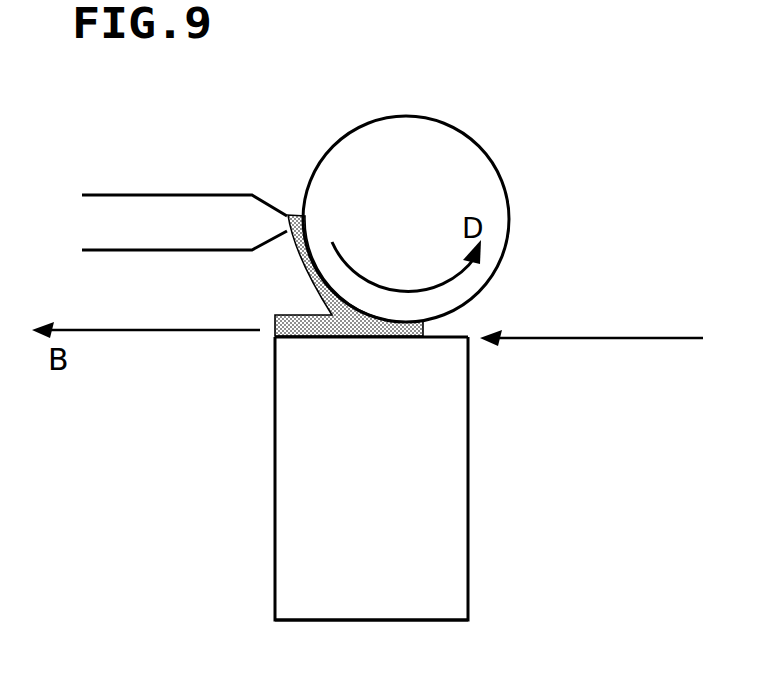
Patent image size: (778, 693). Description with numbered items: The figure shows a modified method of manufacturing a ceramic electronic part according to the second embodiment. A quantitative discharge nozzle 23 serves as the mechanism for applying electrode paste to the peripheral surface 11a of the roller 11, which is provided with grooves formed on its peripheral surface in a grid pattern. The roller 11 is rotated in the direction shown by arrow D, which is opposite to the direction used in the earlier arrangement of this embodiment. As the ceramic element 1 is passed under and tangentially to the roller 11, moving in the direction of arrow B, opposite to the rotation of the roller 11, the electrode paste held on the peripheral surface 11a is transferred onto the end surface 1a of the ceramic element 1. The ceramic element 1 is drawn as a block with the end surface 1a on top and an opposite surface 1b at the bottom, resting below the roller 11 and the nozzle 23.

The roller 11 is at (486, 149).
The peripheral surface 11a is at (310, 178).
The quantitative discharge nozzle 23 is at (165, 194).
The ceramic element 1 is at (478, 496).
The end surface 1a is at (458, 337).
The bottom surface of substrate 1b is at (387, 621).